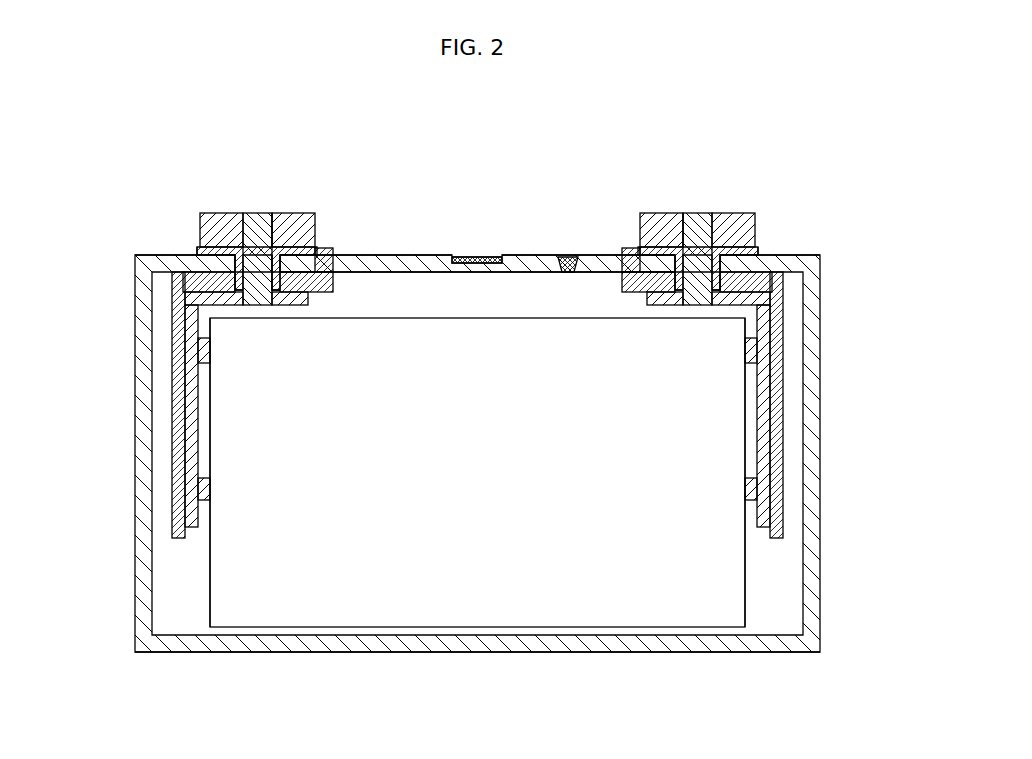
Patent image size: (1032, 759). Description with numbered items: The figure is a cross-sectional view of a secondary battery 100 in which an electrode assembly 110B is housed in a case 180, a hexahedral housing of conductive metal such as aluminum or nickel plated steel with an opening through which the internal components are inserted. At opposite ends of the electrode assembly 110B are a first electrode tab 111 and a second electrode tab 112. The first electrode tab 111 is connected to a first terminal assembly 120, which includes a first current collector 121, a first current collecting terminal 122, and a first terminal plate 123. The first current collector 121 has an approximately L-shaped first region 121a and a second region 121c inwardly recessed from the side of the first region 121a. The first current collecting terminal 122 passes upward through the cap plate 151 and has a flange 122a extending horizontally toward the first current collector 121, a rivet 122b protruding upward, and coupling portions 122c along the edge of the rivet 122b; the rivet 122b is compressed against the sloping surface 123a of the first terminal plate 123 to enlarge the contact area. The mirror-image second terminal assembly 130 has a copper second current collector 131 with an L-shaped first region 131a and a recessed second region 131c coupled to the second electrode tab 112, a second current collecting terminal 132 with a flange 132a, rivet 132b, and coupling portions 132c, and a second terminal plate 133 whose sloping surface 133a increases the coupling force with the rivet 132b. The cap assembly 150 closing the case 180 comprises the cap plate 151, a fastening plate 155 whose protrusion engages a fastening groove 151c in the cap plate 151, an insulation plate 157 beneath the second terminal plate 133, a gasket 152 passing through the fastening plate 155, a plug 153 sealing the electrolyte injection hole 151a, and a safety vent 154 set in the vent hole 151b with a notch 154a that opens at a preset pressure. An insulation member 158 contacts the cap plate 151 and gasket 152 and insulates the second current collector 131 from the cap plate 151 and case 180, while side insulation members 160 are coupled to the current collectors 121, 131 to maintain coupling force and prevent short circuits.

The secondary battery 100 is at (850, 89).
The electrode assembly 110B is at (503, 652).
The first electrode tab 111 is at (205, 452).
The second electrode tab 112 is at (748, 452).
The first terminal assembly 120 is at (204, 211).
The first current collector 121 is at (163, 409).
The first region 121a is at (182, 330).
The second region 121c is at (178, 360).
The first current collecting terminal 122 is at (191, 207).
The flange 122a is at (185, 283).
The rivet 122b is at (215, 243).
The coupling portions 122c is at (226, 200).
The first terminal plate 123 is at (225, 182).
The sloping surface 123a is at (312, 225).
The second terminal assembly 130 is at (764, 221).
The second current collector 131 is at (793, 409).
The first region 131a is at (768, 330).
The second region 131c is at (772, 358).
The second current collecting terminal 132 is at (764, 224).
The flange 132a is at (785, 283).
The rivet 132b is at (727, 213).
The coupling portions 132c is at (672, 203).
The second terminal plate 133 is at (744, 213).
The sloping surface 133a is at (750, 218).
The cap assembly 150 is at (477, 213).
The cap plate 151 is at (477, 240).
The electrolyte injection hole 151a is at (560, 276).
The vent hole 151b is at (480, 276).
The fastening groove 151c is at (318, 262).
The gasket 152 is at (330, 268).
The plug 153 is at (567, 256).
The safety vent 154 is at (482, 233).
The notch 154a is at (473, 257).
The fastening plate 155 is at (310, 250).
The insulation plate 157 is at (640, 228).
The insulation member 158 is at (333, 290).
The side insulation member 160 is at (172, 435).
The case 180 is at (813, 420).